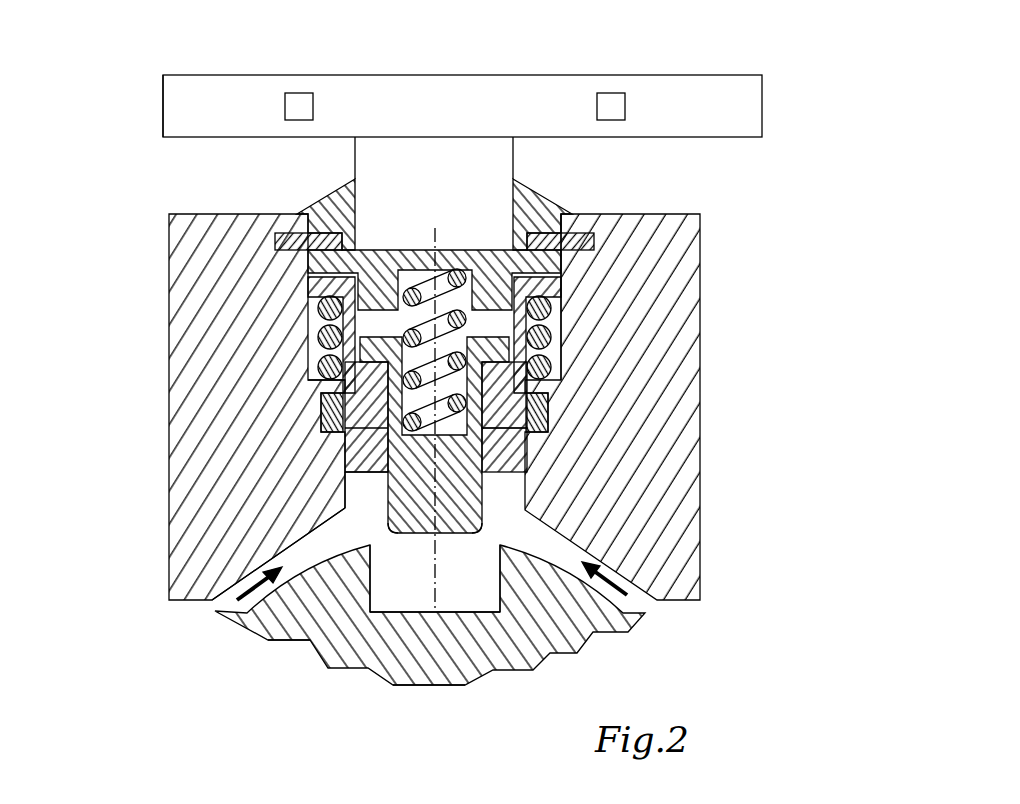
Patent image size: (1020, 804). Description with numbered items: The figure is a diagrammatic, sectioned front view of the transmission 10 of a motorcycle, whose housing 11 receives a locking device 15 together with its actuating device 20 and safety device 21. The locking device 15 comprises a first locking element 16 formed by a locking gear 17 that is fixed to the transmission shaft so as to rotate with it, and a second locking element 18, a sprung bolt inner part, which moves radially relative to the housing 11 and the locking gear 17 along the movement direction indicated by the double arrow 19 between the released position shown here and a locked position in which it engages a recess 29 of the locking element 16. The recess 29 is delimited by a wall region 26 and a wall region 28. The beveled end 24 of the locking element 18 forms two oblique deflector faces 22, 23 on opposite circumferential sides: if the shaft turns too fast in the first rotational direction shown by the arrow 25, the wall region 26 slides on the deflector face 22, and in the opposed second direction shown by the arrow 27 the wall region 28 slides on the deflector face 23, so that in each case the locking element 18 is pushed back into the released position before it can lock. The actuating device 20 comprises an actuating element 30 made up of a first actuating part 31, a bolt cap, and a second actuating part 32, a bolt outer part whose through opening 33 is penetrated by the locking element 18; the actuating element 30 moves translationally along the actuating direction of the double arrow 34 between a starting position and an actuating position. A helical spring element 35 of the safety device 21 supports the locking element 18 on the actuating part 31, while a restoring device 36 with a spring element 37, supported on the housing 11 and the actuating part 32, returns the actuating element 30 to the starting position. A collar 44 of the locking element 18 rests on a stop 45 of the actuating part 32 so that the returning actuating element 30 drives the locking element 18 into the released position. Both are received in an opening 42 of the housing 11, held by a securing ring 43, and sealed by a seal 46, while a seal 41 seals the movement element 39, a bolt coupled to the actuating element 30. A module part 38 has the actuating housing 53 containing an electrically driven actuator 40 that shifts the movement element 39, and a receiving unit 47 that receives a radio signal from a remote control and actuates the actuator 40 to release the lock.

The transmission 10 is at (161, 251).
The housing 11 is at (169, 365).
The locking device 15 is at (325, 648).
The first locking element 16 is at (513, 622).
The locking gear 17 is at (480, 667).
The second locking element 18 is at (478, 513).
The double arrow 19 is at (819, 473).
The actuating device 20 is at (319, 278).
The safety device 21 is at (352, 494).
The deflector face 22 is at (478, 532).
The deflector face 23 is at (393, 530).
The beveled end 24 is at (372, 528).
The arrow 25 is at (613, 578).
The wall region 26 is at (493, 598).
The arrow 27 is at (235, 582).
The wall region 28 is at (372, 595).
The recess 29 is at (422, 615).
The actuating element 30 is at (349, 458).
The first actuating part 31 is at (547, 263).
The second actuating part 32 is at (520, 387).
The through opening 33 is at (496, 448).
The double arrow 34 is at (819, 558).
The spring element 35 is at (458, 272).
The restoring device 36 is at (580, 351).
The spring element 37 is at (545, 338).
The module part 38 is at (730, 113).
The movement element 39 is at (470, 157).
The actuator 40 is at (297, 93).
The seal 41 is at (330, 205).
The opening 42 is at (300, 346).
The securing ring 43 is at (583, 233).
The collar 44 is at (308, 368).
The stop 45 is at (343, 432).
The seal 46 is at (324, 414).
The receiving unit 47 is at (607, 93).
The actuating housing 53 is at (156, 105).